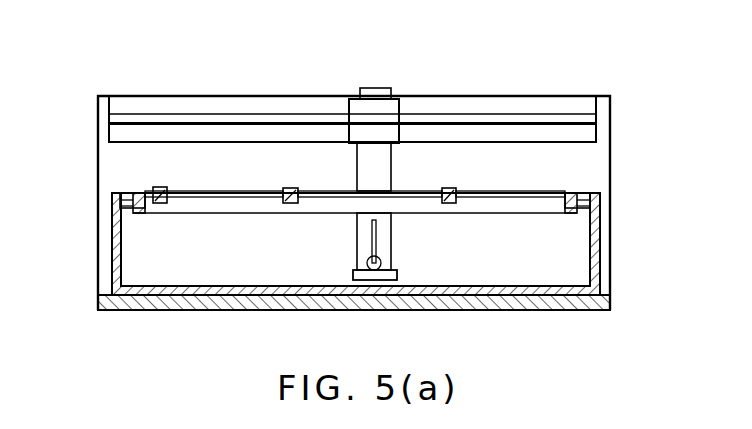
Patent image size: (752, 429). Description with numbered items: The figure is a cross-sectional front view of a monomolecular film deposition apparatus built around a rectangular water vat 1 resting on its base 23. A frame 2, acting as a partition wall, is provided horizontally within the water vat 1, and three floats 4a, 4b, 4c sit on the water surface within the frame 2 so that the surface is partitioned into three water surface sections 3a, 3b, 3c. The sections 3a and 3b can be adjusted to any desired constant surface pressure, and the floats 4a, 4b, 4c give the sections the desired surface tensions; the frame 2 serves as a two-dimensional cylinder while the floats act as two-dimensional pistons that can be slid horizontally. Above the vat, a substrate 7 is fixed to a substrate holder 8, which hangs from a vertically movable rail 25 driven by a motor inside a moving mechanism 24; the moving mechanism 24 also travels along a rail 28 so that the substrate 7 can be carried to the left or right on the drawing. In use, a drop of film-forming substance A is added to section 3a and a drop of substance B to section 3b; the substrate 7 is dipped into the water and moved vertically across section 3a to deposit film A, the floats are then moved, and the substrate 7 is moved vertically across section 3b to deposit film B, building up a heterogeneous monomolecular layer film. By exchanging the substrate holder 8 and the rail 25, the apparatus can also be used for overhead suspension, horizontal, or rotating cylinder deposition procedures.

The water vat 1 is at (600, 234).
The frame 2 is at (121, 193).
The water surface section 3a is at (343, 189).
The water surface section 3b is at (217, 190).
The water surface section 3c is at (520, 189).
The float 4a is at (456, 188).
The float 4b is at (285, 187).
The float 4c is at (154, 188).
The substrate 7 is at (378, 236).
The substrate holder 8 is at (353, 275).
The base 23 is at (612, 298).
The moving mechanism 24 is at (400, 100).
The vertically movable rail 25 is at (375, 88).
The rail for horizontal movement 28 is at (462, 103).